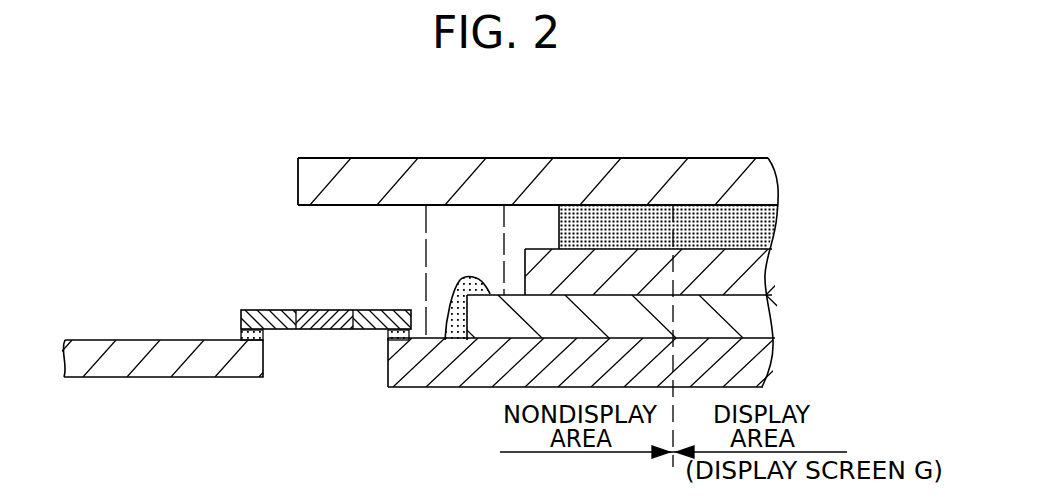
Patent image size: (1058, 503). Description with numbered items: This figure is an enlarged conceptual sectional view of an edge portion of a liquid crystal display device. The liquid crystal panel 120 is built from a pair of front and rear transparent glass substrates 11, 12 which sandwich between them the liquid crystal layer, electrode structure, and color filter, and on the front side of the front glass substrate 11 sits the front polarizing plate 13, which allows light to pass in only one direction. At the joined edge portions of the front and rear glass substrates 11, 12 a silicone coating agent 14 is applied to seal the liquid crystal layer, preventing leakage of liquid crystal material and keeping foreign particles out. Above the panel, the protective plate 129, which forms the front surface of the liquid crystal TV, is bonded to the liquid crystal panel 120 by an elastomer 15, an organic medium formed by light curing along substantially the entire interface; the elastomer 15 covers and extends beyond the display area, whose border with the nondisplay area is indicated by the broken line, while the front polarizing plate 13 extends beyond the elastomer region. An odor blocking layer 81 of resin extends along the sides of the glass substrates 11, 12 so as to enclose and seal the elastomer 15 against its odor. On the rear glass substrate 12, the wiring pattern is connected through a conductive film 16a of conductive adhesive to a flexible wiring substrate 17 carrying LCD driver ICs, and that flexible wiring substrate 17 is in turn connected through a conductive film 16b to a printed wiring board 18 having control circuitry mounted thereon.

The protective plate 129 is at (750, 185).
The elastomer 15 is at (752, 228).
The front polarizing plate 13 is at (750, 277).
The front glass substrate 11 is at (750, 323).
The rear glass substrate 12 is at (601, 362).
The liquid crystal panel 120 is at (635, 318).
The odor blocking layer 81 is at (438, 237).
The silicone coating agent 14 is at (462, 277).
The flexible wiring substrate 17 is at (313, 310).
The conductive film 16a is at (388, 337).
The conductive film 16b is at (240, 332).
The printed wiring board 18 is at (195, 378).